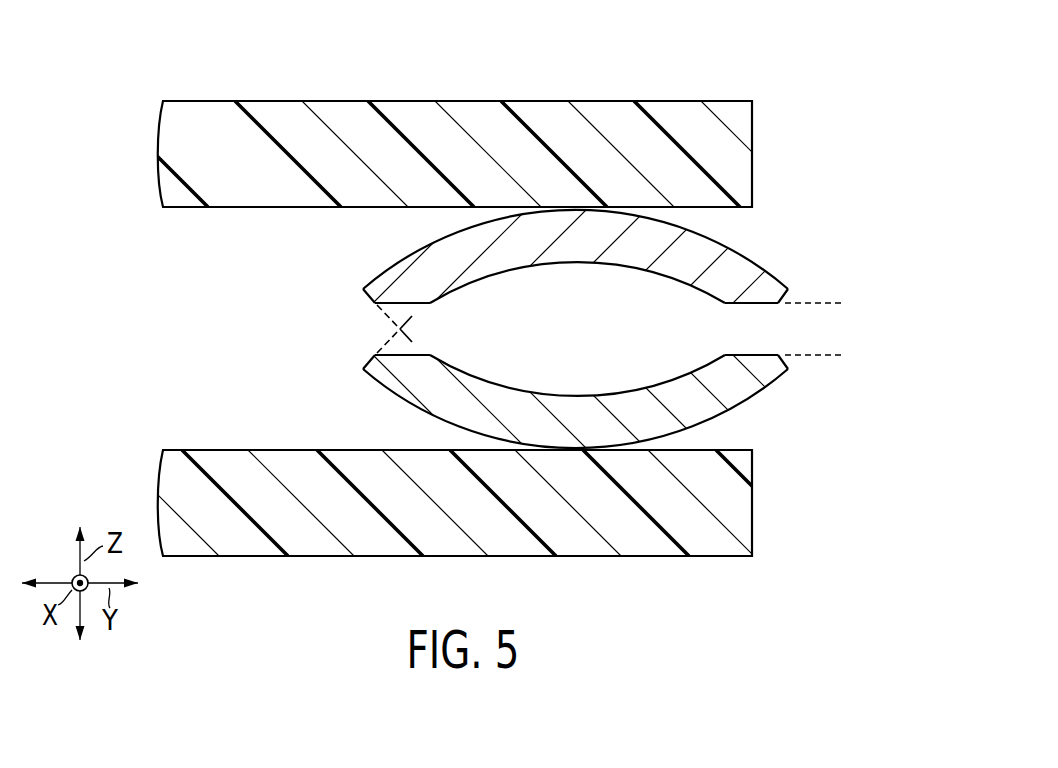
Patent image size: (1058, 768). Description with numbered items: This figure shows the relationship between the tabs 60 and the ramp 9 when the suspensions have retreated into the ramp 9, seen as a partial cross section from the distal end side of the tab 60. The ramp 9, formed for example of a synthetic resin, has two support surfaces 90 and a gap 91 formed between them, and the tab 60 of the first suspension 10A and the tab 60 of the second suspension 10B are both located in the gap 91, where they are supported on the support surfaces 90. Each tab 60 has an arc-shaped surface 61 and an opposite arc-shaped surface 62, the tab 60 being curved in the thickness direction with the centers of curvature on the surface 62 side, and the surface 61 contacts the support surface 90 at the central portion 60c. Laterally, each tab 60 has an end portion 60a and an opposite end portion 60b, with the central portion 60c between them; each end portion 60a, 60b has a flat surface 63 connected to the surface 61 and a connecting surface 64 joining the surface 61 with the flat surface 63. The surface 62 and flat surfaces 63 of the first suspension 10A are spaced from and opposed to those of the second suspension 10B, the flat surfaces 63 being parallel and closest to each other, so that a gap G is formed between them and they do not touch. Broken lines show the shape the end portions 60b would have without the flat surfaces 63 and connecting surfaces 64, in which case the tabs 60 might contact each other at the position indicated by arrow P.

The ramp 9 is at (497, 328).
The first suspension 10A is at (840, 218).
The second suspension 10B is at (840, 445).
The tab 60 is at (577, 331).
The end portion 60a is at (818, 297).
The end portion 60b is at (337, 295).
The central portion 60c is at (574, 265).
The arc-shaped surface (first surface) 61 is at (421, 247).
The arc-shaped surface (second surface) 62 is at (490, 269).
The flat surface 63 is at (424, 305).
The connecting surface 64 is at (362, 293).
The support surface 90 is at (232, 208).
The gap 91 is at (157, 310).
The arrow P (contact position) P is at (393, 328).
The gap G is at (830, 306).